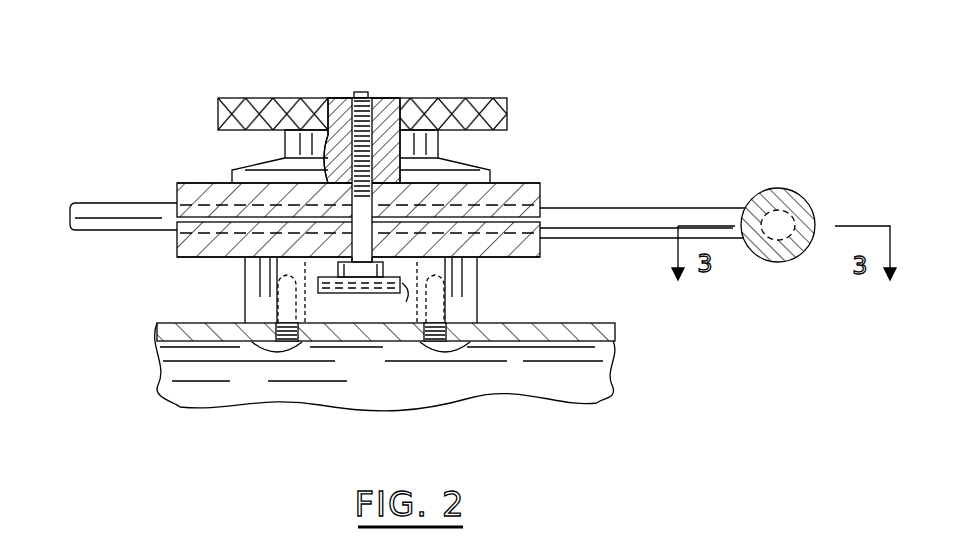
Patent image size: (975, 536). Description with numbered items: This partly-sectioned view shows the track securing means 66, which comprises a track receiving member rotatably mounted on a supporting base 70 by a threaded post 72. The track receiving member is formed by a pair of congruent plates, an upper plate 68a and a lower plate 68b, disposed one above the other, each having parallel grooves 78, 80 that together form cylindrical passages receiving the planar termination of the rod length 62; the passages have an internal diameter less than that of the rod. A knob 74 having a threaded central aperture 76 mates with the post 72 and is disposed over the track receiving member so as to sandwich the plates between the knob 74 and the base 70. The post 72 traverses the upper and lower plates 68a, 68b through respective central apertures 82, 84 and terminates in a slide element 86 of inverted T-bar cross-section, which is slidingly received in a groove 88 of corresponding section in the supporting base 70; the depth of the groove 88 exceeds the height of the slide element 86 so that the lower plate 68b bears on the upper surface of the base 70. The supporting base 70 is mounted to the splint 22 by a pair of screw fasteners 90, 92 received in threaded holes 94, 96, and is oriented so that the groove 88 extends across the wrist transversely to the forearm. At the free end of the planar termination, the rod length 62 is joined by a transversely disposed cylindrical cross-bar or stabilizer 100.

The splint 22 is at (603, 323).
The rod length 62 is at (80, 202).
The track securing means 66 is at (220, 67).
The upper plate 68a is at (545, 207).
The lower plate 68b is at (545, 250).
The supporting base 70 is at (215, 322).
The threaded post 72 is at (363, 92).
The knob 74 is at (285, 131).
The central aperture 76 is at (353, 97).
The groove 78 is at (212, 182).
The groove 80 is at (177, 252).
The central aperture 82 is at (485, 197).
The central aperture 84 is at (495, 250).
The slide element 86 is at (380, 294).
The groove 88 is at (398, 323).
The screw fastener 90 is at (257, 350).
The screw fastener 92 is at (462, 347).
The threaded hole 94 is at (247, 300).
The threaded hole 96 is at (450, 313).
The cross-bar 100 is at (785, 188).